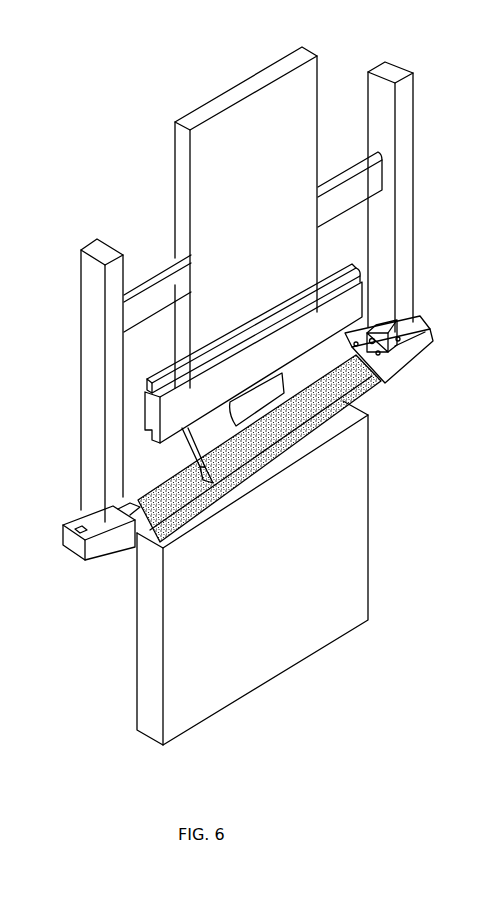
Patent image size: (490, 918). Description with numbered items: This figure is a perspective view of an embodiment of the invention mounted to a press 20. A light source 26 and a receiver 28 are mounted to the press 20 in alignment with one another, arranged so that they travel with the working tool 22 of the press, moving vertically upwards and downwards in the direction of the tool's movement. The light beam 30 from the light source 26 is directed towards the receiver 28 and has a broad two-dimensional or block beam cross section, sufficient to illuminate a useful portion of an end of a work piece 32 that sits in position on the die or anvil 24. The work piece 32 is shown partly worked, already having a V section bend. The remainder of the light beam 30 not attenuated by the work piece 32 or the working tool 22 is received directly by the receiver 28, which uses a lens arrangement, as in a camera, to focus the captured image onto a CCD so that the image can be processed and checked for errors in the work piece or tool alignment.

The press 20 is at (170, 153).
The working tool 22 is at (257, 398).
The die or anvil 24 is at (273, 463).
The light source 26 is at (92, 567).
The receiver 28 is at (398, 380).
The light beam 30 is at (152, 491).
The work piece 32 is at (207, 437).